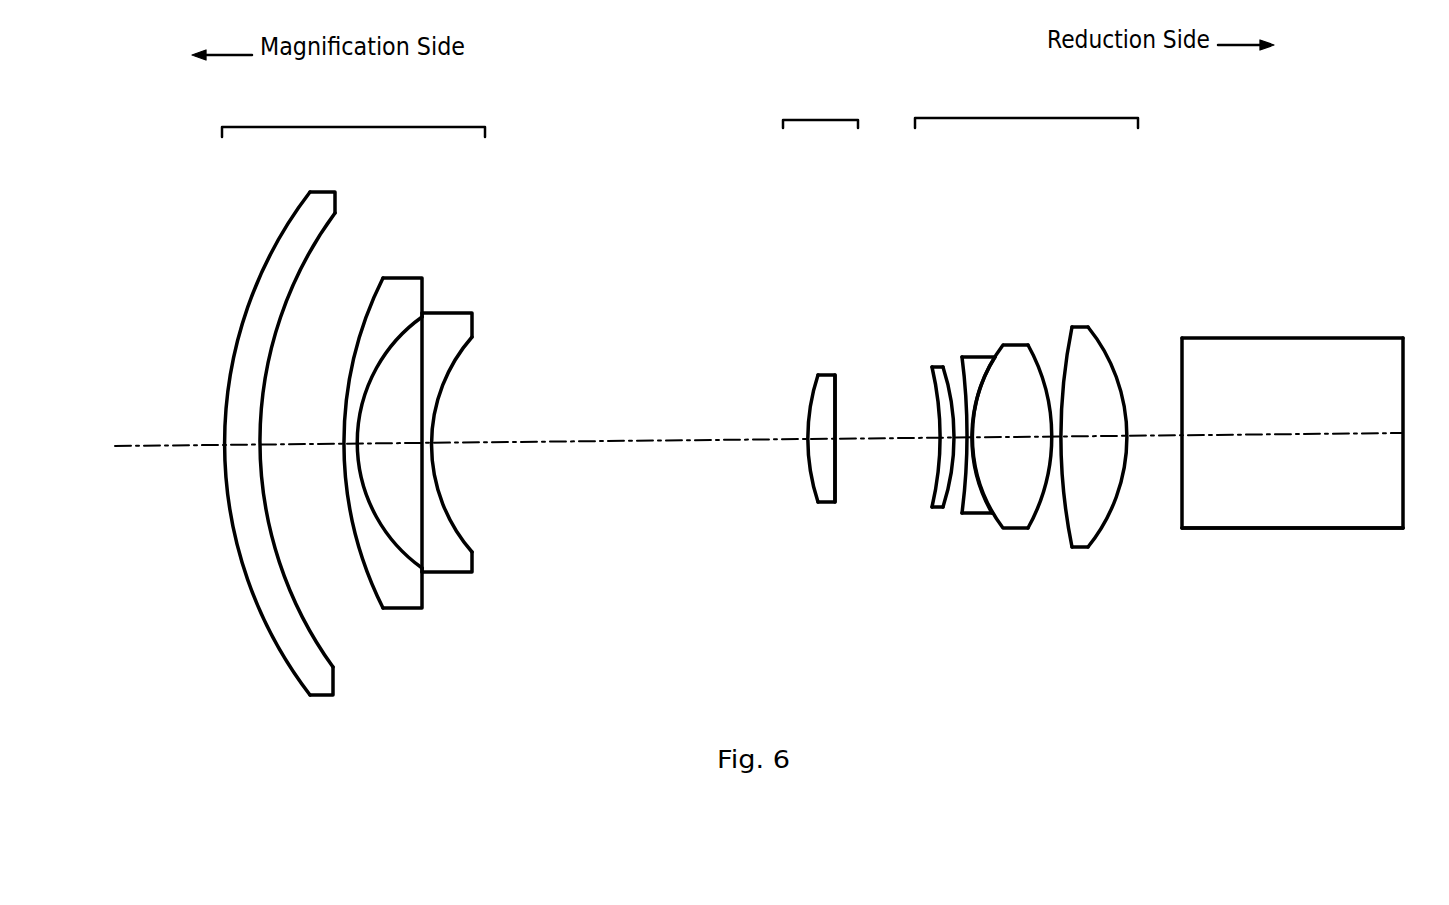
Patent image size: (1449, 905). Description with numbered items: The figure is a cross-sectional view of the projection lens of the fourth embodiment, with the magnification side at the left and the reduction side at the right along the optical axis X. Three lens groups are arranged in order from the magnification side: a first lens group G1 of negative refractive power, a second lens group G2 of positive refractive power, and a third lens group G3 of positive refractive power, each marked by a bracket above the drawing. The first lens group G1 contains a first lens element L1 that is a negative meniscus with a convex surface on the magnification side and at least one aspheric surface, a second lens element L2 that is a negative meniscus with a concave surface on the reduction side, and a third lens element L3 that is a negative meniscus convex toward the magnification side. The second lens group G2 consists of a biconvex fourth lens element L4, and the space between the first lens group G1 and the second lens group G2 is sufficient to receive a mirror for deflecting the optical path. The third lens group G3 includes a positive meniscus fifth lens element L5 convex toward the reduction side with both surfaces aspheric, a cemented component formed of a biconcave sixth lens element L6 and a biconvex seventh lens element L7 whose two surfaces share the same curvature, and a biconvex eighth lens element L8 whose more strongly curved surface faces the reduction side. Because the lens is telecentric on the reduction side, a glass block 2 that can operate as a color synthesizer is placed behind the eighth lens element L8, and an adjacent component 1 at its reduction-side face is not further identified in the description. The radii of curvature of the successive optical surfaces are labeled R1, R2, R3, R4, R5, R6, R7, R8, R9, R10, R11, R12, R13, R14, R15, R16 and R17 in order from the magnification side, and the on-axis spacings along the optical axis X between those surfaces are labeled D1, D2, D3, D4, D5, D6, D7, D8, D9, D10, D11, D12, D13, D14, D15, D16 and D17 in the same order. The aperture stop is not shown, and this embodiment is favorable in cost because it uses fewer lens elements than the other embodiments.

The optical axis X is at (146, 448).
The first lens group G1 is at (340, 408).
The second lens group G2 is at (817, 334).
The third lens group G3 is at (1021, 356).
The first lens element L1 is at (257, 459).
The second lens element L2 is at (363, 479).
The third lens element L3 is at (468, 482).
The fourth lens element L4 is at (817, 465).
The fifth lens element L5 is at (948, 475).
The sixth lens element L6 is at (993, 449).
The seventh lens element L7 is at (1026, 444).
The eighth lens element L8 is at (1105, 424).
The radius of curvature of first optical surface R1 is at (247, 292).
The radius of curvature of second optical surface R2 is at (297, 287).
The radius of curvature of third optical surface R3 is at (350, 375).
The radius of curvature of fourth optical surface R4 is at (372, 340).
The radius of curvature of fifth optical surface R5 is at (424, 478).
The radius of curvature of sixth optical surface R6 is at (448, 373).
The radius of curvature of seventh optical surface R7 is at (808, 397).
The radius of curvature of eighth optical surface R8 is at (845, 410).
The radius of curvature of ninth optical surface R9 is at (937, 403).
The radius of curvature of tenth optical surface R10 is at (968, 515).
The radius of curvature of eleventh optical surface R11 is at (960, 385).
The radius of curvature of twelfth optical surface R12 is at (978, 373).
The radius of curvature of thirteenth optical surface R13 is at (1044, 362).
The radius of curvature of fourteenth optical surface R14 is at (1058, 366).
The radius of curvature of fifteenth optical surface R15 is at (1107, 350).
The radius of curvature of sixteenth optical surface R16 is at (1178, 388).
The radius of curvature of seventeenth optical surface R17 is at (1405, 355).
The first on-axis surface spacing D1 is at (217, 435).
The second on-axis surface spacing D2 is at (311, 447).
The third on-axis surface spacing D3 is at (355, 452).
The fourth on-axis surface spacing D4 is at (413, 436).
The fifth on-axis surface spacing D5 is at (440, 428).
The sixth on-axis surface spacing D6 is at (517, 436).
The seventh on-axis surface spacing D7 is at (805, 431).
The eighth on-axis surface spacing D8 is at (820, 428).
The ninth on-axis surface spacing D9 is at (936, 448).
The tenth on-axis surface spacing D10 is at (943, 418).
The eleventh on-axis surface spacing D11 is at (1012, 436).
The twelfth on-axis surface spacing D12 is at (1015, 437).
The thirteenth on-axis surface spacing D13 is at (1084, 426).
The fourteenth on-axis surface spacing D14 is at (1102, 440).
The fifteenth on-axis surface spacing D15 is at (1141, 437).
The sixteenth on-axis surface spacing D16 is at (1255, 432).
The seventeenth on-axis surface spacing D17 is at (1402, 434).
The prism / glass block 1 is at (1299, 404).
The glass block 2 is at (1238, 512).